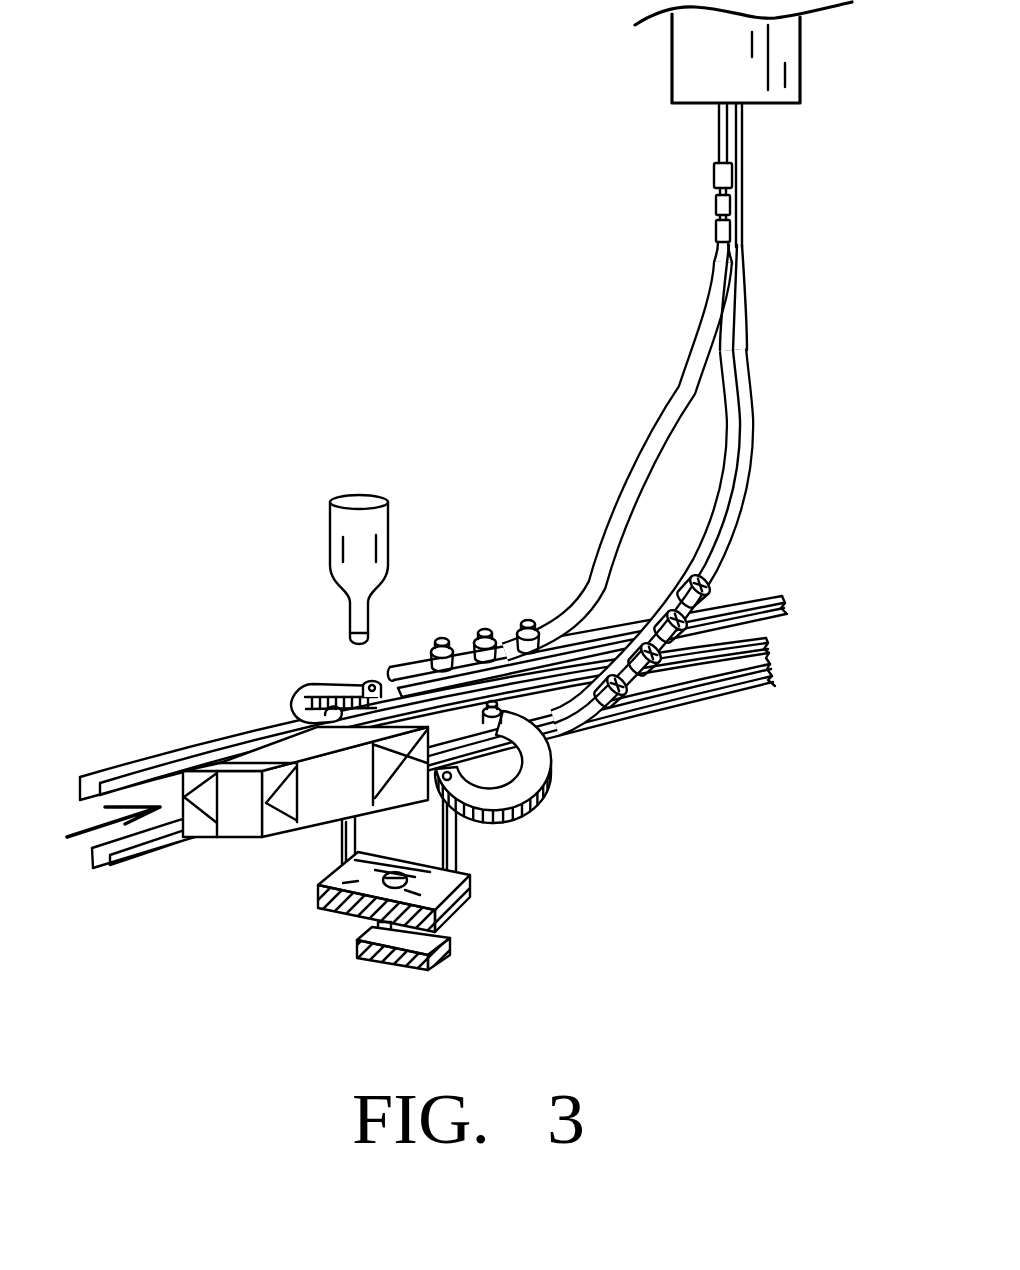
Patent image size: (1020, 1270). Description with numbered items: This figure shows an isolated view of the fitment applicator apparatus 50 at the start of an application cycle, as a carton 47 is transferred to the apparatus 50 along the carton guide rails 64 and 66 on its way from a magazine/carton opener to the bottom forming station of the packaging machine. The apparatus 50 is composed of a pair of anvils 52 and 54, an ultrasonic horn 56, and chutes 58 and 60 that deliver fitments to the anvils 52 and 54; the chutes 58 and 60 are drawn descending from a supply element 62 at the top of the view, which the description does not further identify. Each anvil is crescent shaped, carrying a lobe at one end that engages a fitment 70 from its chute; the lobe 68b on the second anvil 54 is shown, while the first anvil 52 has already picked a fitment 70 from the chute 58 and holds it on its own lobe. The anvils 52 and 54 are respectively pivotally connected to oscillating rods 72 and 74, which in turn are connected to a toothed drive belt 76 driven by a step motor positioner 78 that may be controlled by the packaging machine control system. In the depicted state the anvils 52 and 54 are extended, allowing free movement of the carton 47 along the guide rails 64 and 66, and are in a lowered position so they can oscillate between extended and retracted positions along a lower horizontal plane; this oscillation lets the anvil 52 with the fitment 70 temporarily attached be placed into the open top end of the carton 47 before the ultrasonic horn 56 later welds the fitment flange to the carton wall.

The carton 47 is at (305, 782).
The apparatus 50 is at (431, 800).
The first anvil 52 is at (558, 790).
The second anvil 54 is at (300, 684).
The ultrasonic horn 56 is at (420, 550).
The chute 58 is at (752, 442).
The chute 60 is at (677, 390).
The reservoir 62 is at (743, 124).
The carton guide rail 64 is at (775, 597).
The carton guide rail 66 is at (753, 675).
The lobe 68b is at (362, 688).
The fitment 70 is at (529, 628).
The oscillating rod 72 is at (460, 845).
The oscillating rod 74 is at (342, 841).
The toothed drive belt 76 is at (318, 910).
The step motor positioner 78 is at (450, 944).